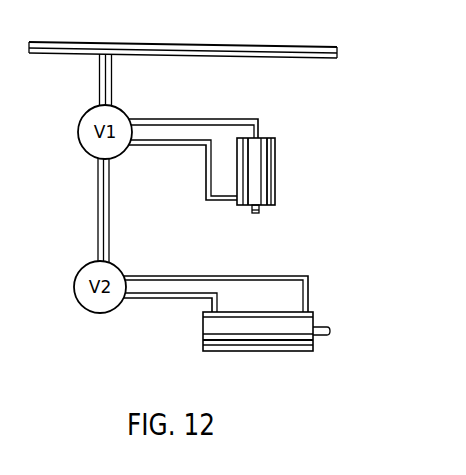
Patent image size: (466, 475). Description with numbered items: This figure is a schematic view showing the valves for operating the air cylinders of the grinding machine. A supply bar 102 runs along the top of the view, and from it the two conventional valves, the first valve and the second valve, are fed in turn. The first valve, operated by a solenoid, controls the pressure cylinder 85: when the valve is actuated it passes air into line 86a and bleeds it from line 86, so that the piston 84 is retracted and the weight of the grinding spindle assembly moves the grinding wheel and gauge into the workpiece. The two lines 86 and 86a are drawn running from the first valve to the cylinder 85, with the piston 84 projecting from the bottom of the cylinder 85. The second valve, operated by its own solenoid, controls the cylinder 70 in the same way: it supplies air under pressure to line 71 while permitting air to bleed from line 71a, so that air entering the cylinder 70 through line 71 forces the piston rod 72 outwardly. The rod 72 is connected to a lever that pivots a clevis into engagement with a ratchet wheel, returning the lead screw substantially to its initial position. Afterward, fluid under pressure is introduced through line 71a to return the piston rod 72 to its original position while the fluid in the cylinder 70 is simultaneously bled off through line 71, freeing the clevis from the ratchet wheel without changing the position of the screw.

The supply bar / manifold 102 is at (158, 52).
The line 86 is at (212, 118).
The line 86a is at (206, 160).
The pressure cylinder 85 is at (276, 166).
The piston 84 is at (261, 210).
The line 71a is at (212, 276).
The line 71 is at (162, 300).
The cylinder 70 is at (254, 340).
The piston rod 72 is at (323, 337).